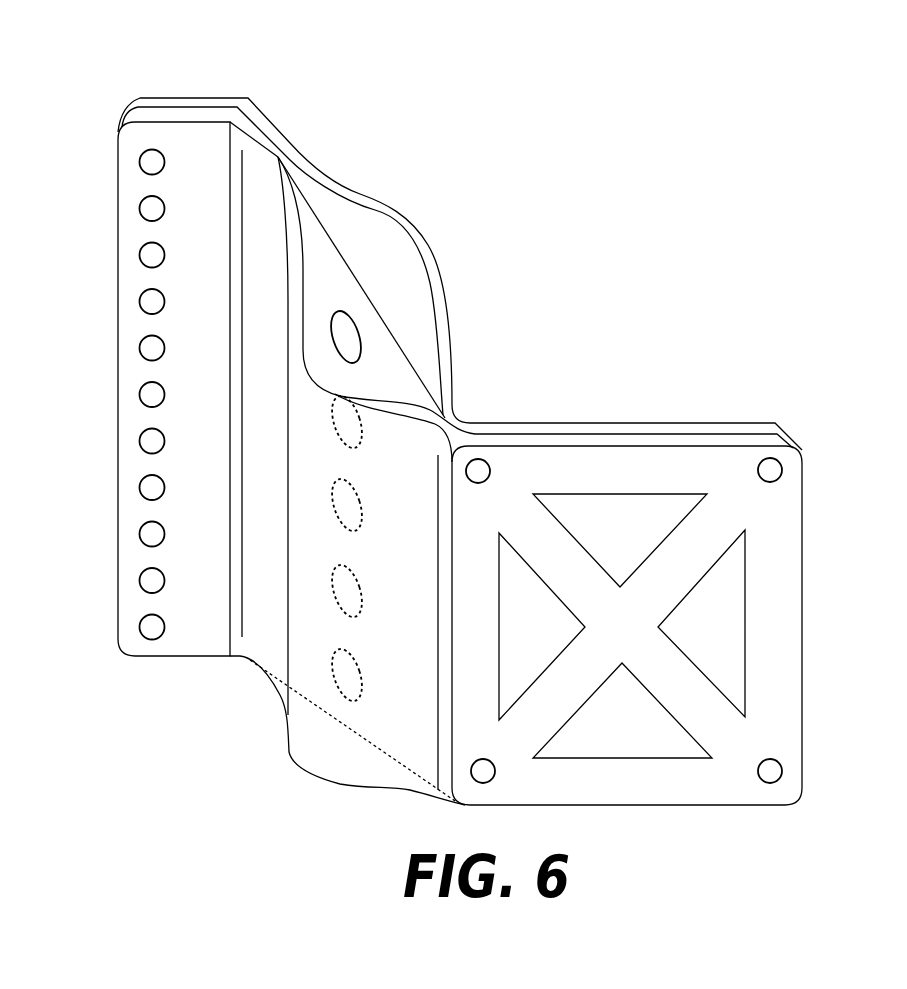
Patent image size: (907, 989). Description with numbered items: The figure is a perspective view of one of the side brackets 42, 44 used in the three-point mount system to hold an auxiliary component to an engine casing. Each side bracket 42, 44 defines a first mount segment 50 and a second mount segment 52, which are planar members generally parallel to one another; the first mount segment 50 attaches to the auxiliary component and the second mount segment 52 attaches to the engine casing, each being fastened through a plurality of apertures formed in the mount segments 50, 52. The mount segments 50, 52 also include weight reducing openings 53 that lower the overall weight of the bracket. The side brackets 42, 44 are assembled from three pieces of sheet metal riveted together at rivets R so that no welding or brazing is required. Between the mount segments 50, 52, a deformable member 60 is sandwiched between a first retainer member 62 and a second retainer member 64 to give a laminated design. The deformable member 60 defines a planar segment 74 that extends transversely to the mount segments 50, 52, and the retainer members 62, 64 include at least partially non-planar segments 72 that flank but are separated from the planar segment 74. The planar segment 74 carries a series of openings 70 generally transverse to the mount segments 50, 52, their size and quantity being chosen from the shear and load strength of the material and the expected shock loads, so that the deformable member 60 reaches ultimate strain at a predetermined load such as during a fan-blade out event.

The side bracket 42 is at (461, 414).
The side bracket 44 is at (456, 414).
The first mount segment 50 is at (627, 417).
The second mount segment 52 is at (167, 95).
The weight reducing openings 53 is at (723, 643).
The deformable member 60 is at (413, 360).
The first retainer member 62 is at (131, 175).
The second retainer member 64 is at (136, 96).
The openings 70 is at (363, 335).
The non-planar segments 72 is at (295, 267).
The planar segment 74 is at (353, 276).
The rivets R is at (478, 470).